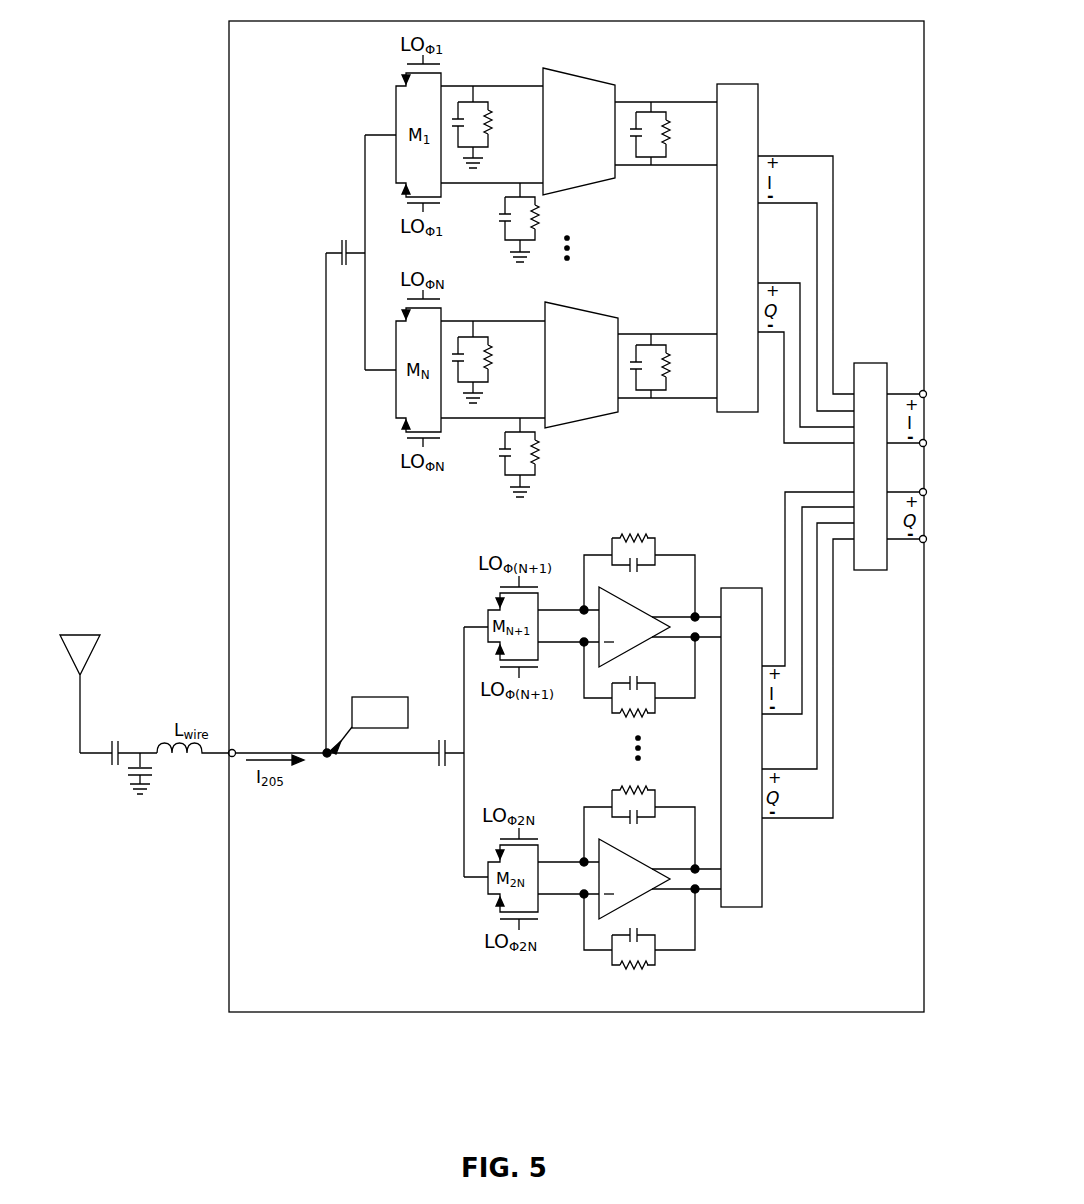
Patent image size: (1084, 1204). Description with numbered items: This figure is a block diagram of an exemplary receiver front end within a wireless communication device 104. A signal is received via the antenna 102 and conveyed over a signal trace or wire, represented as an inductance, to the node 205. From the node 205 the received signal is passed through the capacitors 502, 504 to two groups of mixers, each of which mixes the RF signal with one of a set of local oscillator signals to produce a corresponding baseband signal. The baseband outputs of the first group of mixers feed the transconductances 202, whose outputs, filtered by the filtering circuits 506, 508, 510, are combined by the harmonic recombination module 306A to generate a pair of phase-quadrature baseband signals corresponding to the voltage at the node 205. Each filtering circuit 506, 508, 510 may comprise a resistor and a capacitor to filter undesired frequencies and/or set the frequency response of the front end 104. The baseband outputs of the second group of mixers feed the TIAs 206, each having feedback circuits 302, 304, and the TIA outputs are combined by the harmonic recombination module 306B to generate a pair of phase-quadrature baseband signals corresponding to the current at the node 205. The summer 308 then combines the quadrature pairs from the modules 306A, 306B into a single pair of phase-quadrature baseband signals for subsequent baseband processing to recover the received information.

The antenna 102 is at (95, 627).
The wireless communication device 104 is at (229, 103).
The transconductance 202 is at (580, 248).
The node 205 is at (328, 758).
The TIA 206 is at (634, 753).
The feedback circuit 302 is at (658, 534).
The feedback circuit 304 is at (606, 719).
The harmonic recombination module 306A is at (737, 248).
The harmonic recombination module 306B is at (741, 747).
The summer 308 is at (870, 466).
The capacitor 502 is at (340, 244).
The capacitor 504 is at (438, 765).
The filtering circuit 506 is at (494, 111).
The filtering circuit 508 is at (675, 125).
The filtering circuit 510 is at (502, 208).